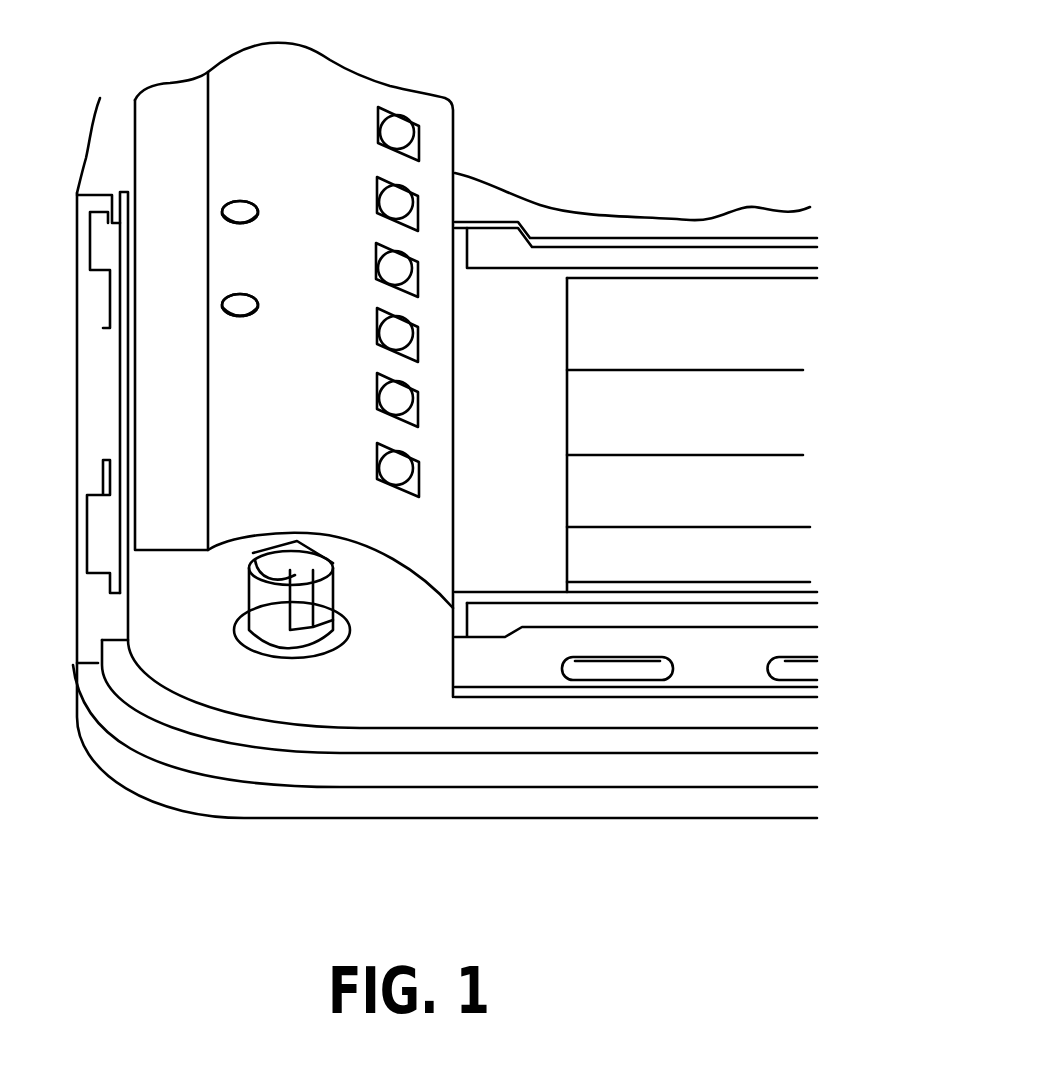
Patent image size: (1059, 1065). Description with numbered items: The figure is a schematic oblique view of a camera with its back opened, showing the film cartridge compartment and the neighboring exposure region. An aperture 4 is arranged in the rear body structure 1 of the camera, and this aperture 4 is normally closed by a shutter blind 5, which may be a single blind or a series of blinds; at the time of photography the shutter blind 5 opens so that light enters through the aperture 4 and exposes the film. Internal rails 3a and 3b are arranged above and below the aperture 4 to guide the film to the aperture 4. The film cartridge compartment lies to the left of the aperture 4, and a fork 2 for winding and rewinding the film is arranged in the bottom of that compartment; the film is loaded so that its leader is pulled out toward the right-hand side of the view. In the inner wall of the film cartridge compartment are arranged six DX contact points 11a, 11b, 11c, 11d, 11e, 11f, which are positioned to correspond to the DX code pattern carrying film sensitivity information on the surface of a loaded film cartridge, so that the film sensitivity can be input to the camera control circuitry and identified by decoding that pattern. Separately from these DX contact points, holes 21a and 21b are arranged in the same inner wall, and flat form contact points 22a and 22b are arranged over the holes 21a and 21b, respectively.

The rear body structure 1 is at (175, 680).
The fork 2 is at (268, 622).
The internal rail 3a is at (658, 257).
The internal rail 3b is at (685, 613).
The aperture 4 is at (560, 540).
The shutter blind 5 is at (757, 418).
The DX contact point 11a is at (397, 470).
The DX contact point 11b is at (402, 400).
The DX contact point 11c is at (402, 338).
The DX contact point 11d is at (405, 272).
The DX contact point 11e is at (402, 202).
The DX contact point 11f is at (396, 130).
The hole 21a is at (223, 222).
The hole 21b is at (223, 320).
The flat form contact point 22a is at (242, 202).
The flat form contact point 22b is at (244, 298).